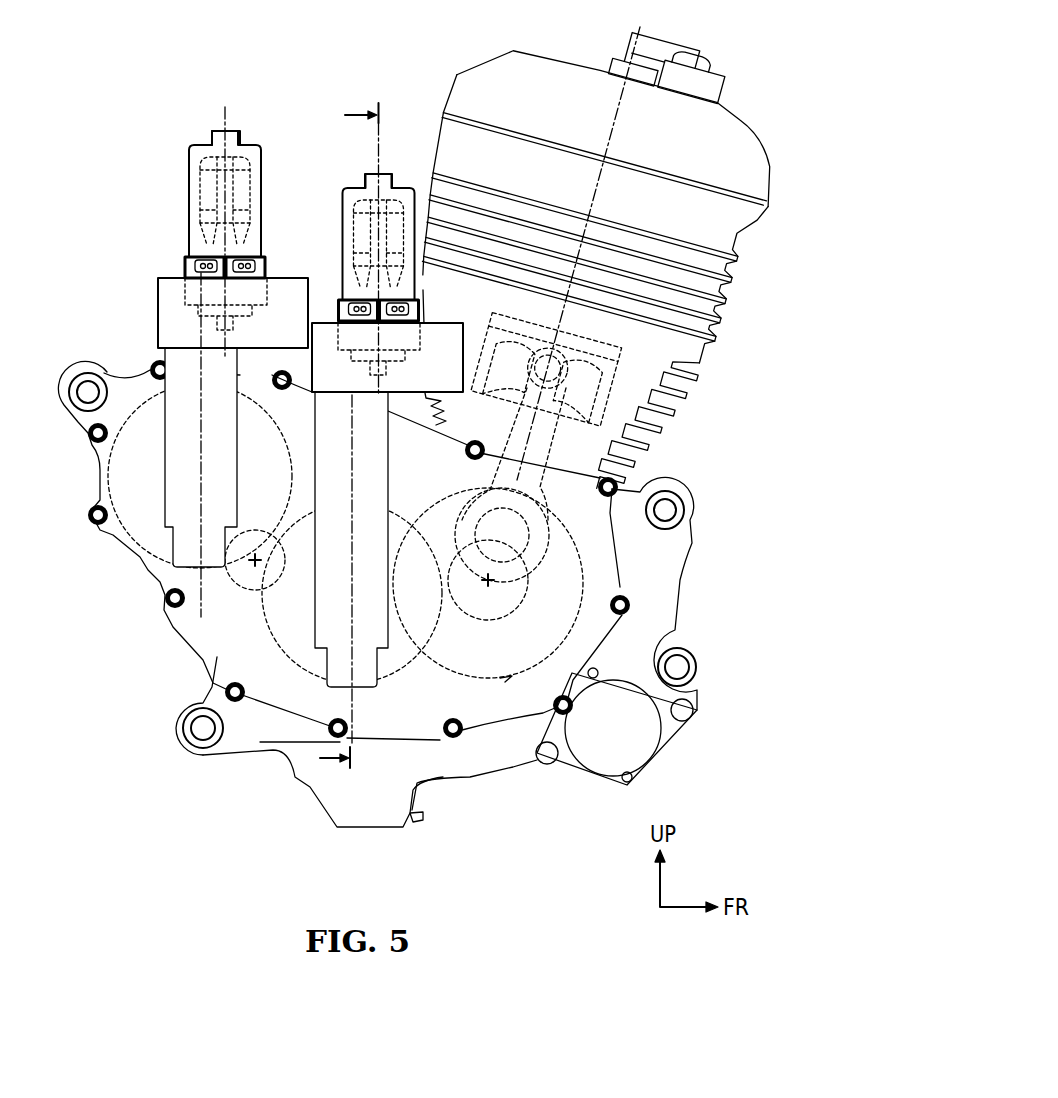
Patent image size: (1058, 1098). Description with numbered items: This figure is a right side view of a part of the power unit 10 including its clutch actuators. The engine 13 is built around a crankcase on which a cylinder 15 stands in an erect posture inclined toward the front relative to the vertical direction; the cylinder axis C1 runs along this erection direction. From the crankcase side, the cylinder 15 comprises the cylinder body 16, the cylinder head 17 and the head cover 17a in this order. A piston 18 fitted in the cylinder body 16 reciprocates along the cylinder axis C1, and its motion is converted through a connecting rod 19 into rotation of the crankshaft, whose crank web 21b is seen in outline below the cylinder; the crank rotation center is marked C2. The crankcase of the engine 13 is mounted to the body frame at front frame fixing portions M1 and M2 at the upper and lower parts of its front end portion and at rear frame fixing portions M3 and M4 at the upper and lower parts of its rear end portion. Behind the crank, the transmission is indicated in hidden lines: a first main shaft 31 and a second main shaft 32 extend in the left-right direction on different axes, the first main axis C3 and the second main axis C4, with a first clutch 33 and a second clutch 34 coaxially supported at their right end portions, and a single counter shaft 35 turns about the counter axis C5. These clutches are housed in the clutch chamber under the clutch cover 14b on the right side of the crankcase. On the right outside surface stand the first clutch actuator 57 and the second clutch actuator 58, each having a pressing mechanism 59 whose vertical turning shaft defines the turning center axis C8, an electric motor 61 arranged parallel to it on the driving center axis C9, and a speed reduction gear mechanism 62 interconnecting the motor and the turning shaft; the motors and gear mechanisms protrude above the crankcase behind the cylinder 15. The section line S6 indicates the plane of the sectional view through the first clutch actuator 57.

The power unit 10 is at (430, 594).
The engine 13 is at (695, 541).
The clutch cover 14b is at (220, 657).
The cylinder 15 is at (602, 398).
The cylinder body 16 is at (660, 430).
The cylinder head 17 is at (733, 299).
The head cover 17a is at (742, 117).
The piston 18 is at (625, 352).
The connecting rod 19 is at (548, 438).
The crank web 21b is at (353, 722).
The first main shaft 31 is at (333, 596).
The second main shaft 32 is at (180, 477).
The first clutch 33 is at (348, 605).
The second clutch 34 is at (148, 548).
The counter shaft 35 is at (233, 582).
The first clutch actuator 57 is at (343, 190).
The second clutch actuator 58 is at (190, 148).
The pressing mechanism 59 is at (160, 362).
The electric motor 61 is at (259, 146).
The speed reduction gear mechanism 62 is at (166, 285).
The cylinder axis C1 is at (616, 121).
The crankshaft axis C2 is at (491, 584).
The first main axis C3 is at (352, 591).
The second main axis C4 is at (198, 473).
The counter axis C5 is at (255, 562).
The turning center axis C8 is at (205, 442).
The driving center axis C9 is at (232, 112).
The section line S6 is at (345, 438).
The front frame fixing portion M1 is at (689, 503).
The front frame fixing portion M2 is at (697, 667).
The rear frame fixing portion M3 is at (80, 374).
The rear frame fixing portion M4 is at (190, 742).